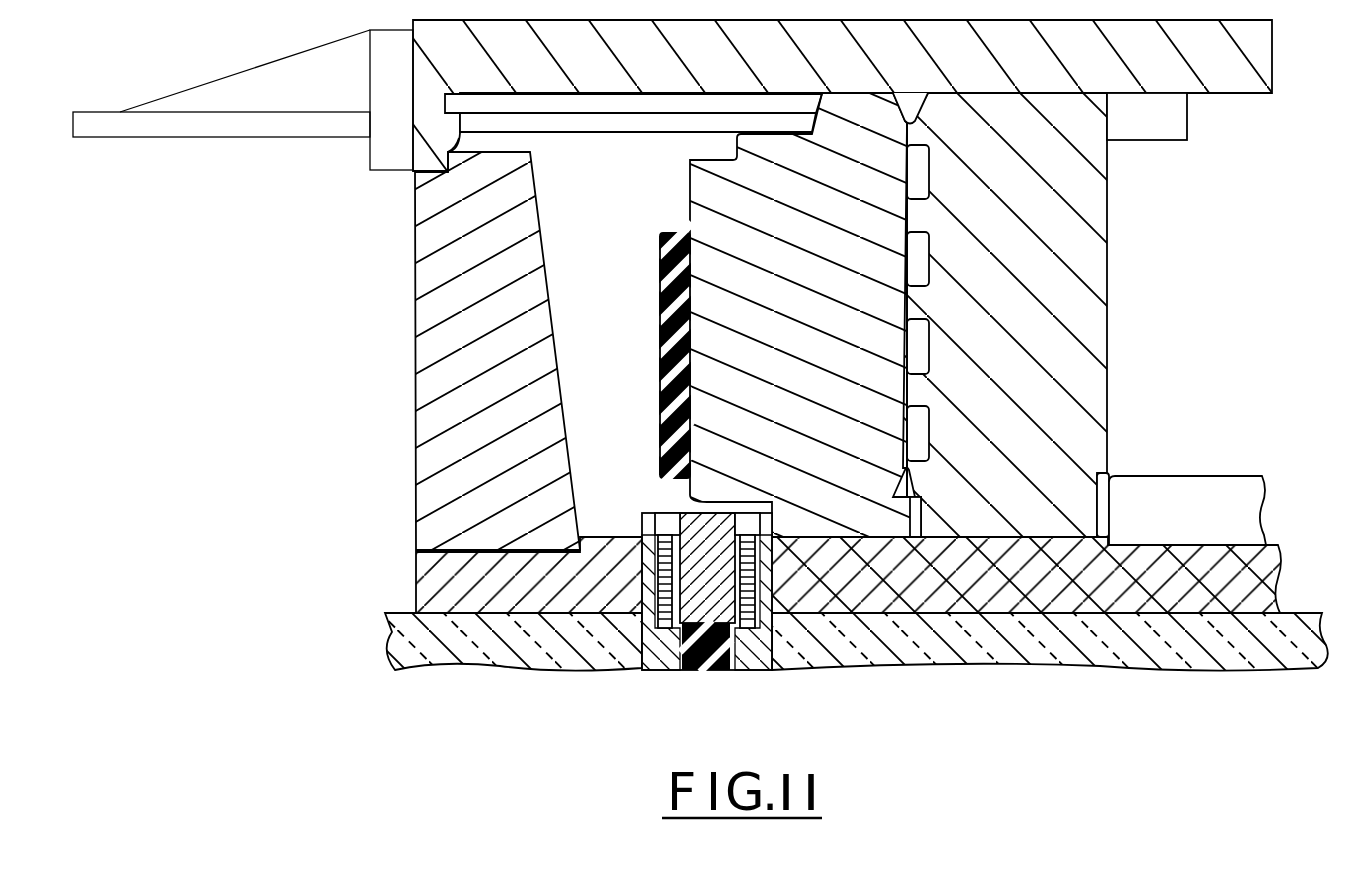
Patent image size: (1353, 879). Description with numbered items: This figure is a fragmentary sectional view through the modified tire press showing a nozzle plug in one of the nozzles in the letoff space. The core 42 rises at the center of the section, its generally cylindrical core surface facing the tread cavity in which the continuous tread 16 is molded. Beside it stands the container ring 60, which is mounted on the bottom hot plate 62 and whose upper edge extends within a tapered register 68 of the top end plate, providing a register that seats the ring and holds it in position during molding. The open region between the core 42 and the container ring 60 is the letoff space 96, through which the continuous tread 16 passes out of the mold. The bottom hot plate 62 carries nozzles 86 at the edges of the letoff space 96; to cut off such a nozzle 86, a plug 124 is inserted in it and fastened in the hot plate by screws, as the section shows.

The continuous tread 16 is at (658, 316).
The core 42 is at (705, 183).
The container ring 60 is at (428, 247).
The bottom hot plate 62 is at (416, 580).
The tapered register 68 is at (453, 148).
The nozzle 86 is at (730, 617).
The letoff space 96 is at (628, 481).
The plug 124 is at (700, 598).